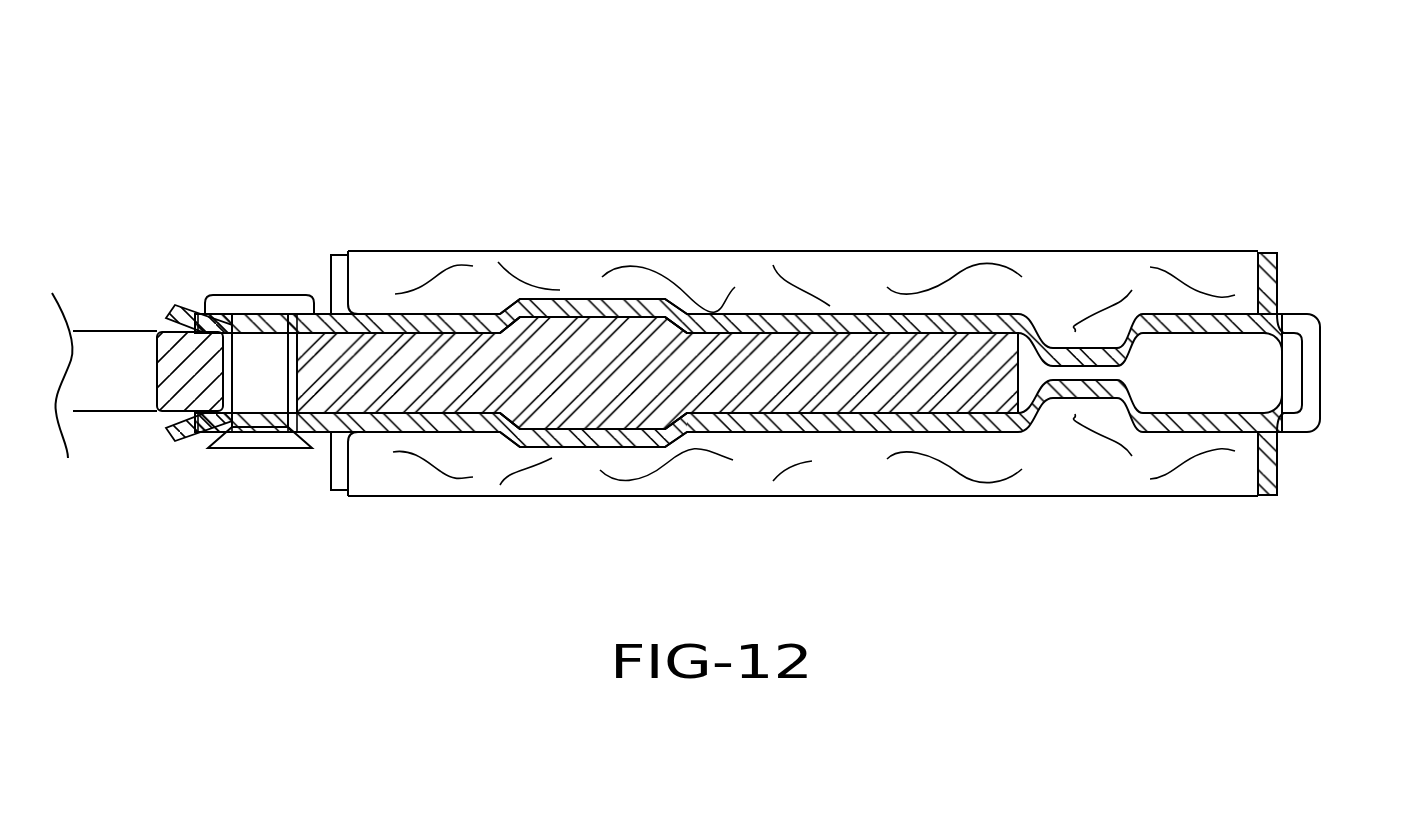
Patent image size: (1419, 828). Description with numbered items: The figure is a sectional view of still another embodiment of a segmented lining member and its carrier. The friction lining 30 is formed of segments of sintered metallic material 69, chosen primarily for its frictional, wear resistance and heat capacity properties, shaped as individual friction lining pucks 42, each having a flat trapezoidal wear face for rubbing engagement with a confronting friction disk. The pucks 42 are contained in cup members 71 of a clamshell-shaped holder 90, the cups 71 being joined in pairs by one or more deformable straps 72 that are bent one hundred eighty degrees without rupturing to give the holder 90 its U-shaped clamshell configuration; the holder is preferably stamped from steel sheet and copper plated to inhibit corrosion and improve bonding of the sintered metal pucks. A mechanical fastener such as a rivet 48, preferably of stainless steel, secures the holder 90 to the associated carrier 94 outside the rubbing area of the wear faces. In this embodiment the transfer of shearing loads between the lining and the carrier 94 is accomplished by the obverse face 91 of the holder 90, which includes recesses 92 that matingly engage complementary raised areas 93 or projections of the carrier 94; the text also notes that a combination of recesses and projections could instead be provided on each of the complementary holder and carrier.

The holder 90 is at (312, 165).
The carrier 94 is at (118, 388).
The rivet 48 is at (262, 300).
The friction lining 30 is at (870, 496).
The sintered metallic material 69 is at (873, 251).
The friction lining puck 42 is at (442, 272).
The cup member 71 is at (1277, 281).
The obverse face 91 is at (782, 333).
The recesses 92 is at (569, 297).
The raised areas 93 is at (610, 312).
The deformable strap 72 is at (1322, 373).